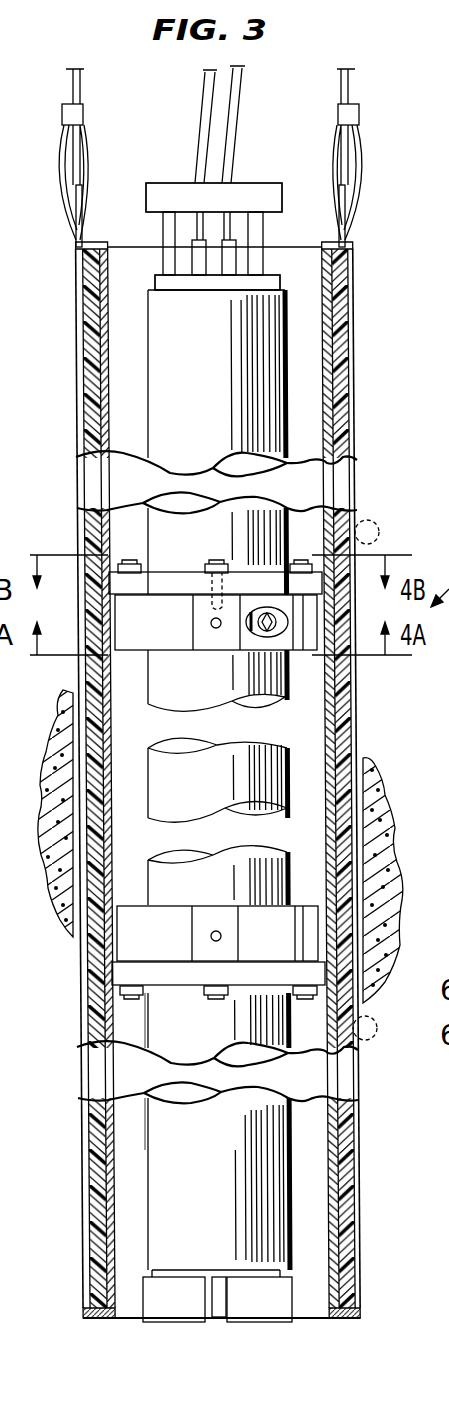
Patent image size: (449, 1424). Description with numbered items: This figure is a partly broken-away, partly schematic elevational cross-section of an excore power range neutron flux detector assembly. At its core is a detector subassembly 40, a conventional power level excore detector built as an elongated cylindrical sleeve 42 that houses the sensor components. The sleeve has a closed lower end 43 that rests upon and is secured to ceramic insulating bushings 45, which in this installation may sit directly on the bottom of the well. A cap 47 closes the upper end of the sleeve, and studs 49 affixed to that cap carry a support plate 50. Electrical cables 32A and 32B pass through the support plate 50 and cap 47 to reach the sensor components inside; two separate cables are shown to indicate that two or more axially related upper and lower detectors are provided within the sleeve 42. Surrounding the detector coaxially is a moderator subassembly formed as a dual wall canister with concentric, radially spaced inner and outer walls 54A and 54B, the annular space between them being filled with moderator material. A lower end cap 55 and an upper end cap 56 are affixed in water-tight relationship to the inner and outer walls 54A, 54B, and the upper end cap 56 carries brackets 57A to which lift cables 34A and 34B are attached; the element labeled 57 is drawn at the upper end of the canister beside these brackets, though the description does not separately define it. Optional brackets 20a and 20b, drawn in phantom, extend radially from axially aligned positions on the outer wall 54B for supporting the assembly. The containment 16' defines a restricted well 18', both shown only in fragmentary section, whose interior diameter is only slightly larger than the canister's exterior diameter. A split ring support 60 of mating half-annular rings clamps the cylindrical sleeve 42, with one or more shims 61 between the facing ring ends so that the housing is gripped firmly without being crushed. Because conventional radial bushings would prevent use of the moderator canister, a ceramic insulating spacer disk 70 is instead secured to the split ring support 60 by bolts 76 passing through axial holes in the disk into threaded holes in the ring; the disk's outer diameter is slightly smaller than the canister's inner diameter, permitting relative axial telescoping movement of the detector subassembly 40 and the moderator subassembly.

The containment 16' is at (236, 813).
The well 18' is at (390, 880).
The bracket 20a is at (372, 521).
The bracket 20b is at (373, 1036).
The electrical cable 32A is at (202, 97).
The electrical cable 32B is at (243, 92).
The lift cable 34A is at (82, 93).
The lift cable 34B is at (341, 90).
The detector subassembly 40 is at (122, 192).
The cylindrical sleeve 42 is at (283, 330).
The closed lower end 43 is at (284, 1292).
The ceramic insulating bushings 45 is at (142, 1292).
The cap 47 is at (157, 281).
The studs 49 is at (163, 225).
The support plate 50 is at (272, 190).
The inner wall 54A is at (76, 313).
The outer wall 54B is at (77, 270).
The lower end cap 55 is at (360, 1316).
The upper end cap 56 is at (76, 243).
The right end cap 57 is at (352, 246).
The brackets 57A is at (79, 203).
The split ring support 60 is at (307, 630).
The shims 61 is at (290, 637).
The spacer disk 70 is at (183, 580).
The bolts 76 is at (133, 565).